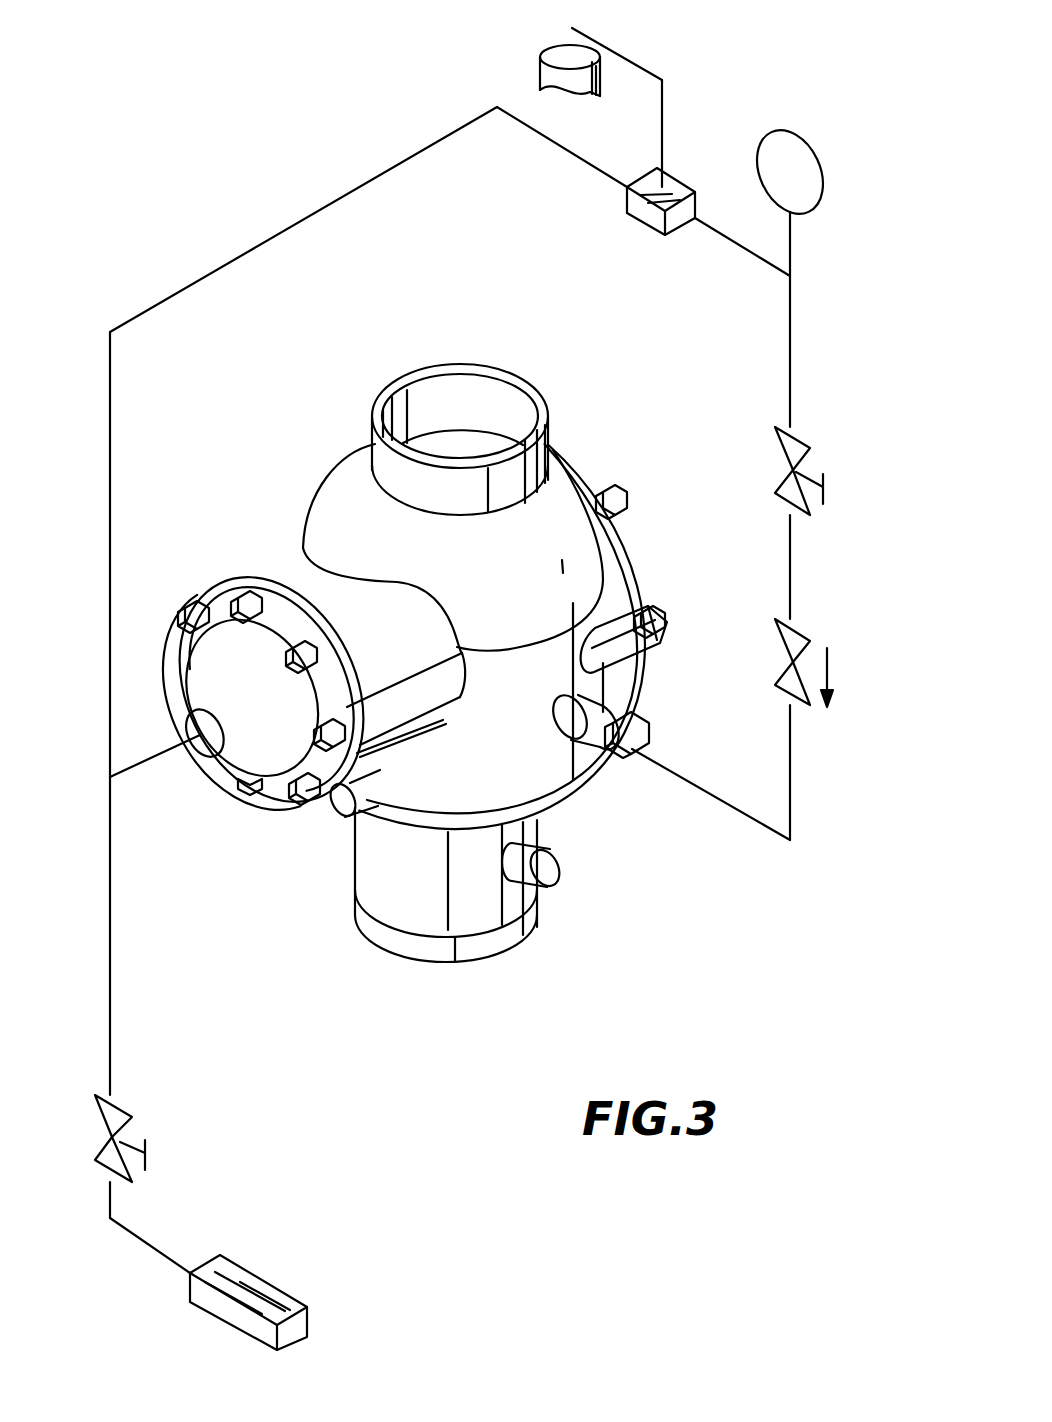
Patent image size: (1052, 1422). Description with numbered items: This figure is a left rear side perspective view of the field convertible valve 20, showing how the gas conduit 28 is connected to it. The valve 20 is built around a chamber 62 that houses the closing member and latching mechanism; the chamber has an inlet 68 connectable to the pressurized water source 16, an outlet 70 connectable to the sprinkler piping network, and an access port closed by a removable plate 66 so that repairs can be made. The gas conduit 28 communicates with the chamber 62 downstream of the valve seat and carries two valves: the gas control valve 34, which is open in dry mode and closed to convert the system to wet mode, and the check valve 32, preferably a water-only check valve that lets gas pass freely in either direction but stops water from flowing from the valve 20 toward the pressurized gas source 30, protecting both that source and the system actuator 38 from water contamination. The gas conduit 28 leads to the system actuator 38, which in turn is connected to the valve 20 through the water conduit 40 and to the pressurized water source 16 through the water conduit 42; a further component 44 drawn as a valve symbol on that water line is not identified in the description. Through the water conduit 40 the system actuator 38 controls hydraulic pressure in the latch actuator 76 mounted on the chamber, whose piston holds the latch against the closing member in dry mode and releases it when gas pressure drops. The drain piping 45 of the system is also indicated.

The pressurized water source 16 is at (235, 1270).
The field convertible valve 20 is at (333, 490).
The gas conduit 28 is at (692, 786).
The pressurized gas source 30 is at (772, 135).
The check valve 32 is at (775, 665).
The gas control valve 34 is at (775, 469).
The system actuator 38 is at (641, 184).
The water conduit 40 is at (152, 776).
The water conduit 42 is at (112, 965).
The valve 44 is at (140, 1119).
The drain piping 45 is at (570, 50).
The chamber 62 is at (462, 450).
The removable plate 66 is at (641, 571).
The inlet 68 is at (425, 965).
The outlet 70 is at (528, 390).
The latch actuator 76 is at (278, 548).